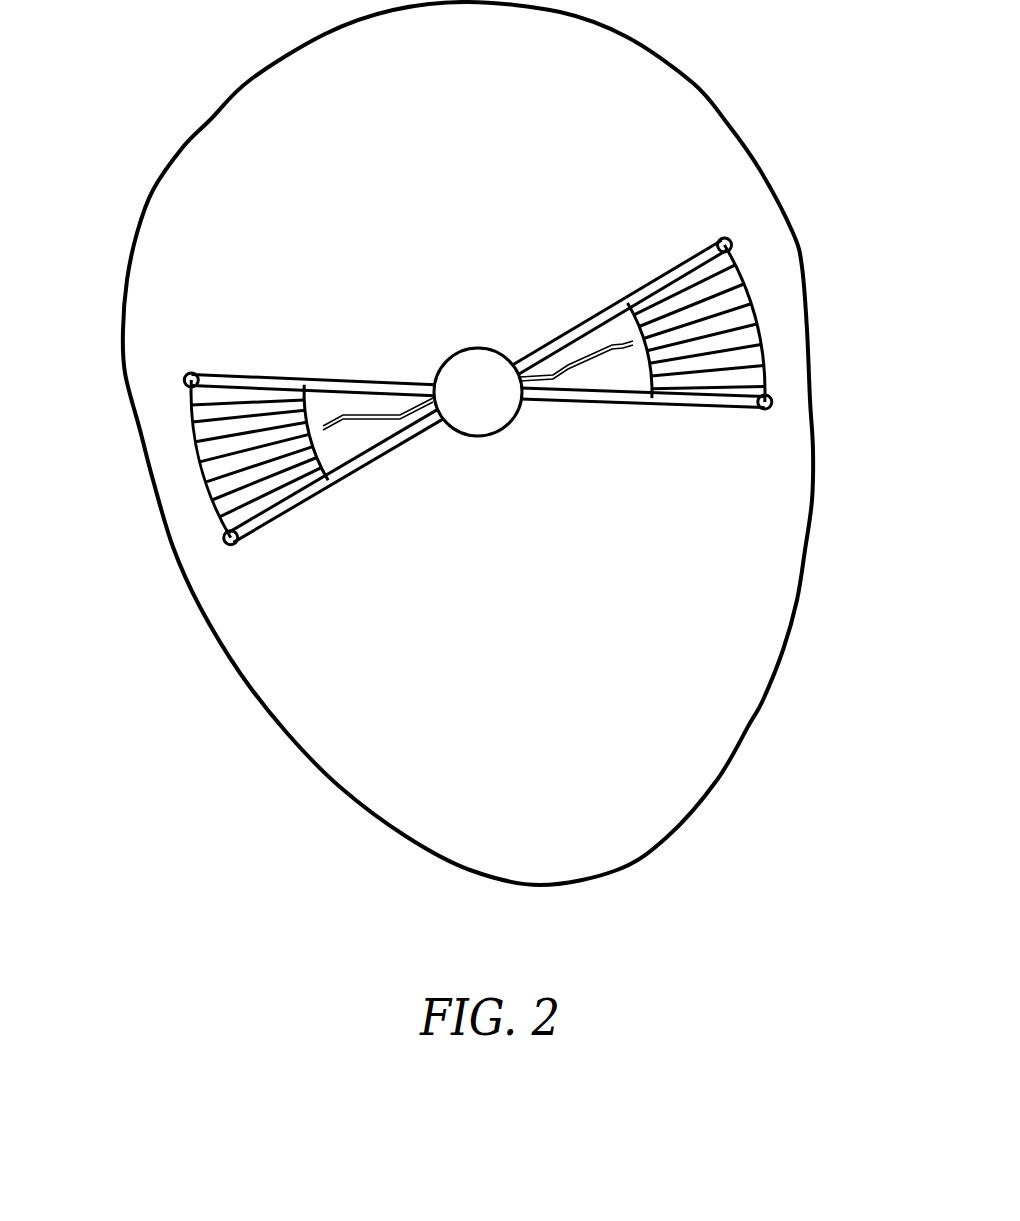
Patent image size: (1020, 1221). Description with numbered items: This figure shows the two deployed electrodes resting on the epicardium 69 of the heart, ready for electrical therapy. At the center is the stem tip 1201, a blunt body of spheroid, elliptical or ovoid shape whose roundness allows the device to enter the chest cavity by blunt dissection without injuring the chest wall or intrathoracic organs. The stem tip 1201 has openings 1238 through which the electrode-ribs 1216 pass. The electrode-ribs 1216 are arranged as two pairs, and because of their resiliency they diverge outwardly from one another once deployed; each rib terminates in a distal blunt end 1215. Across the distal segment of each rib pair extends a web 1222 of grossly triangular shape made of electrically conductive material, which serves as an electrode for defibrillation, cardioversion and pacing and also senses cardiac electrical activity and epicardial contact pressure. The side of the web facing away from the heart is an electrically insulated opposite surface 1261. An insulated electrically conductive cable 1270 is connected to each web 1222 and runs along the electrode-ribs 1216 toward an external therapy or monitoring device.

The housing outline 69 is at (461, 443).
The stem tip 1201 is at (463, 365).
The distal blunt end 1215 is at (109, 351).
The electrode-ribs 1216 is at (313, 350).
The web 1222 is at (185, 459).
The openings 1238 is at (643, 431).
The electrically insulated opposite surface 1261 is at (765, 309).
The insulated electrically conductive cable 1270 is at (574, 320).